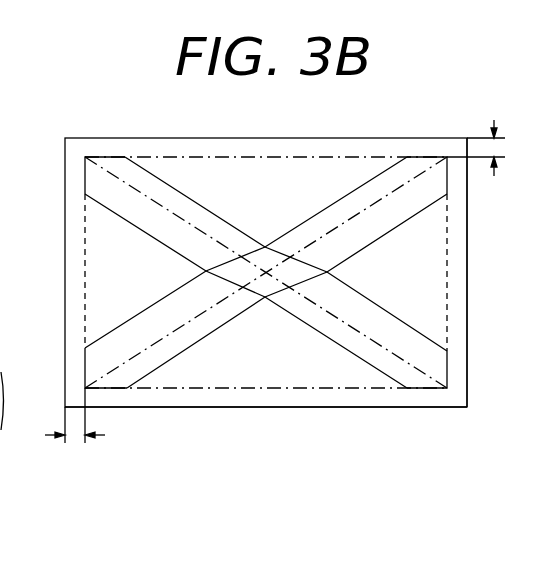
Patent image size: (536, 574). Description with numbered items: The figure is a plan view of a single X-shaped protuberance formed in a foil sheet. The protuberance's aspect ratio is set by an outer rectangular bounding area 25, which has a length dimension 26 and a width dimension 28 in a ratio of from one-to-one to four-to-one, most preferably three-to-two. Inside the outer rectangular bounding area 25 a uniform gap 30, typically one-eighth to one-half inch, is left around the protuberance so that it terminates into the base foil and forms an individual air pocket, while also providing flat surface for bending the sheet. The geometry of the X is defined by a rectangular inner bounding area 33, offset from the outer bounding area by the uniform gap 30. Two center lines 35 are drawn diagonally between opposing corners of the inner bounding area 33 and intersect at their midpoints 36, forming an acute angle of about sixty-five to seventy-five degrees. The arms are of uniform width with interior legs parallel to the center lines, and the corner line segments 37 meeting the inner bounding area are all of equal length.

The outer rectangular bounding area 25 is at (230, 137).
The length dimension 26 is at (340, 408).
The width dimension 28 is at (467, 240).
The uniform gap 30 is at (505, 147).
The rectangular inner bounding area 33 is at (265, 157).
The center lines 35 is at (205, 232).
The midpoints 36 is at (265, 247).
The corner line segments 37 is at (436, 362).